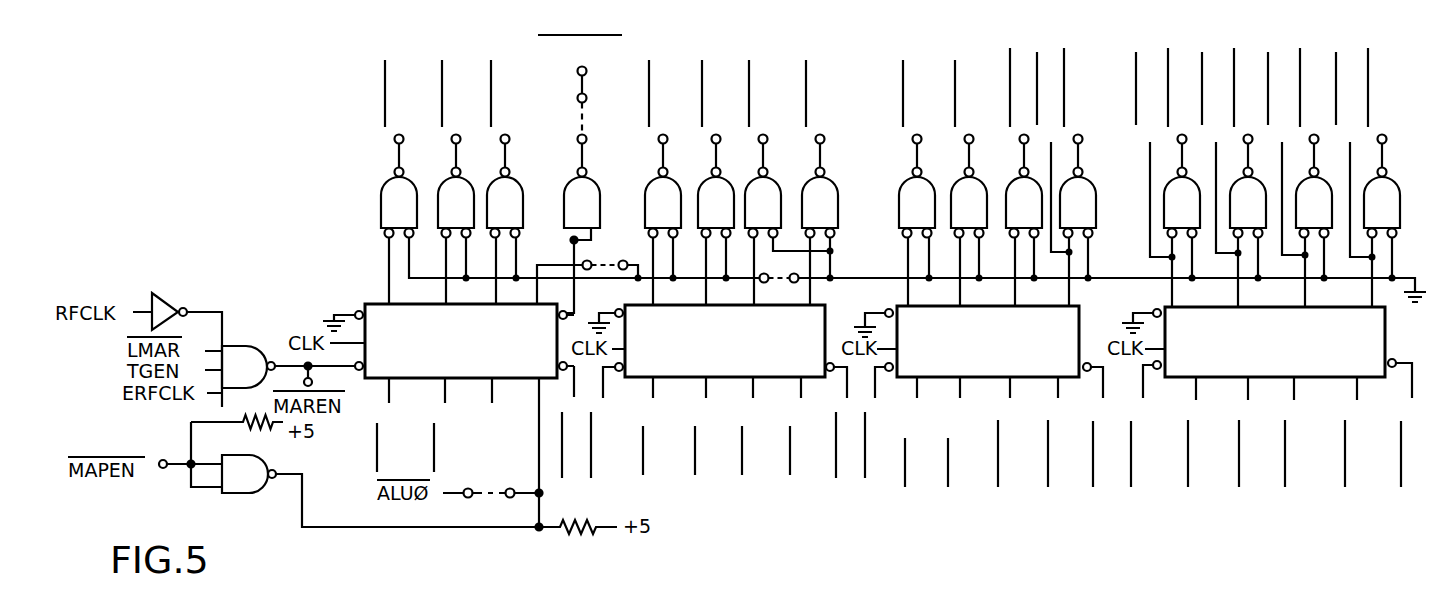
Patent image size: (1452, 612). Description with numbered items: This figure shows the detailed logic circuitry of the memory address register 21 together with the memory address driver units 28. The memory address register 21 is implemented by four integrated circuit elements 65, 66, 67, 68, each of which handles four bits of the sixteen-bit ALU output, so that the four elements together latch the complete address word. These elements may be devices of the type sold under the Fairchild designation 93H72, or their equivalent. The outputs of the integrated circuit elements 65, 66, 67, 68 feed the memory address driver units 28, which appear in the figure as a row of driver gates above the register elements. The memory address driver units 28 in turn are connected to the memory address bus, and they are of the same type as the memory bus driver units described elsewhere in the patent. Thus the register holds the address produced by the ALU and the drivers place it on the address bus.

The memory address driver units 28 is at (774, 216).
The memory address register 21 is at (769, 341).
The integrated circuit element 65 is at (451, 351).
The integrated circuit element 66 is at (717, 351).
The integrated circuit element 67 is at (987, 351).
The integrated circuit element 68 is at (1257, 351).